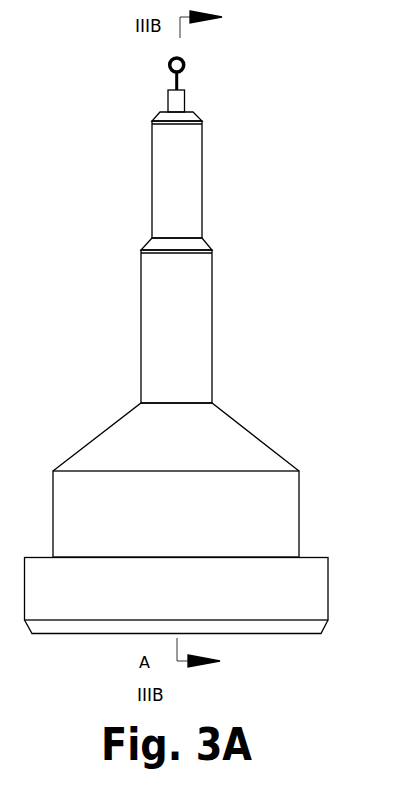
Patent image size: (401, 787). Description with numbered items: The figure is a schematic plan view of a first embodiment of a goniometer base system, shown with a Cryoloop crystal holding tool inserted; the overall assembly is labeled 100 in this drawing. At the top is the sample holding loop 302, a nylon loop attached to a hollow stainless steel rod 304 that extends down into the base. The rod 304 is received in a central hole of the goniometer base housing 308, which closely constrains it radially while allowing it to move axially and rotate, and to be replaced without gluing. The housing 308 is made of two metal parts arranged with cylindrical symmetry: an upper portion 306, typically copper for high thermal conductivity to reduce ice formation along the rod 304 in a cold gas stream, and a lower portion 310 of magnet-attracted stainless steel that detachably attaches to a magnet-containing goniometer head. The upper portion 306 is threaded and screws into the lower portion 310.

The lighting device 100 is at (104, 665).
The sample holding loop 302 is at (186, 69).
The rod 304 is at (172, 110).
The upper portion 306 is at (212, 284).
The goniometer base housing 308 is at (64, 363).
The lower portion 310 is at (299, 495).